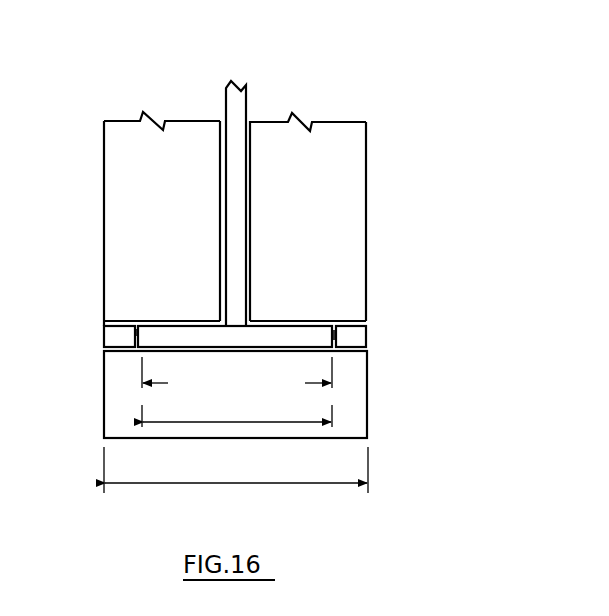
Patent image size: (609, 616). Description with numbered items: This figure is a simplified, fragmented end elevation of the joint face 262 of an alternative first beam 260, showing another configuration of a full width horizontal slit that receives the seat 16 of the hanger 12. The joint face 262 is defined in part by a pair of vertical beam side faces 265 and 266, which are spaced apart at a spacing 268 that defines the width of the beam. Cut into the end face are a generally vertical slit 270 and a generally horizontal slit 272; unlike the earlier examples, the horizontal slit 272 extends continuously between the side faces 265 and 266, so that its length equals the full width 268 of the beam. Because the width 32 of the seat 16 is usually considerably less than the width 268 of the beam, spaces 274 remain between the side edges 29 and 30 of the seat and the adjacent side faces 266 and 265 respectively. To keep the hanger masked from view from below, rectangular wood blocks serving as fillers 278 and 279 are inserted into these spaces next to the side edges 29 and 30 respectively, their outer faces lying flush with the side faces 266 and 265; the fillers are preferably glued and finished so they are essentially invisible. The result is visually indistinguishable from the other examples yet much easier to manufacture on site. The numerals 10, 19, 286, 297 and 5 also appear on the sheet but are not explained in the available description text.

The hanger 12 is at (233, 111).
The assembly 10 is at (251, 98).
The first beam 260 is at (101, 199).
The vertical beam side face 265 is at (103, 233).
The vertical slit 270 is at (222, 220).
The bottom edge of left block 19 is at (222, 318).
The joint face 262 is at (331, 241).
The vertical beam side face 266 is at (367, 212).
The side edge of the seat 29 is at (332, 320).
The seat 16 is at (255, 352).
The side edge of the seat 30 is at (136, 330).
The filler 279 is at (118, 335).
The filler 278 is at (357, 335).
The horizontal slit 272 is at (188, 352).
The space 274 is at (104, 383).
The width of the seat 32 is at (268, 420).
The spacing 268 is at (272, 483).
The adjacent element 286 is at (15, 124).
The adjacent element 297 is at (16, 357).
The adjacent element 5 is at (4, 482).